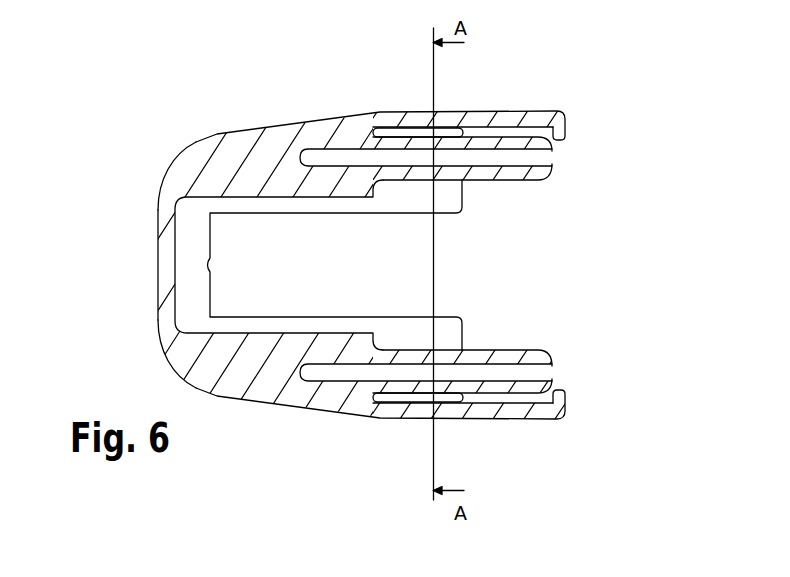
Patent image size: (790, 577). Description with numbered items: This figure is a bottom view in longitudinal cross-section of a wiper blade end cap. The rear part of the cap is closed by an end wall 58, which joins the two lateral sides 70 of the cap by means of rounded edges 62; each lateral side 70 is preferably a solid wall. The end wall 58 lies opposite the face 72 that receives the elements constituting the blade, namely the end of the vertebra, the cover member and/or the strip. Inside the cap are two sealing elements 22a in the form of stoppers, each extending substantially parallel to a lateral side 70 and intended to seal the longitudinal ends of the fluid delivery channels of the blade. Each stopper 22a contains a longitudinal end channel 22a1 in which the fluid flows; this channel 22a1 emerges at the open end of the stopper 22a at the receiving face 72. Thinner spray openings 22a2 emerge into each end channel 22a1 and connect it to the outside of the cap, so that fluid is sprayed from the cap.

The end wall 58 is at (133, 277).
The rounded edges 62 is at (177, 148).
The lateral side 70 is at (498, 108).
The face receiving the elements that constitute the blade 72 is at (590, 290).
The sealing element 22a is at (519, 181).
The longitudinal channel 22a1 is at (553, 160).
The spray openings 22a2 is at (302, 153).